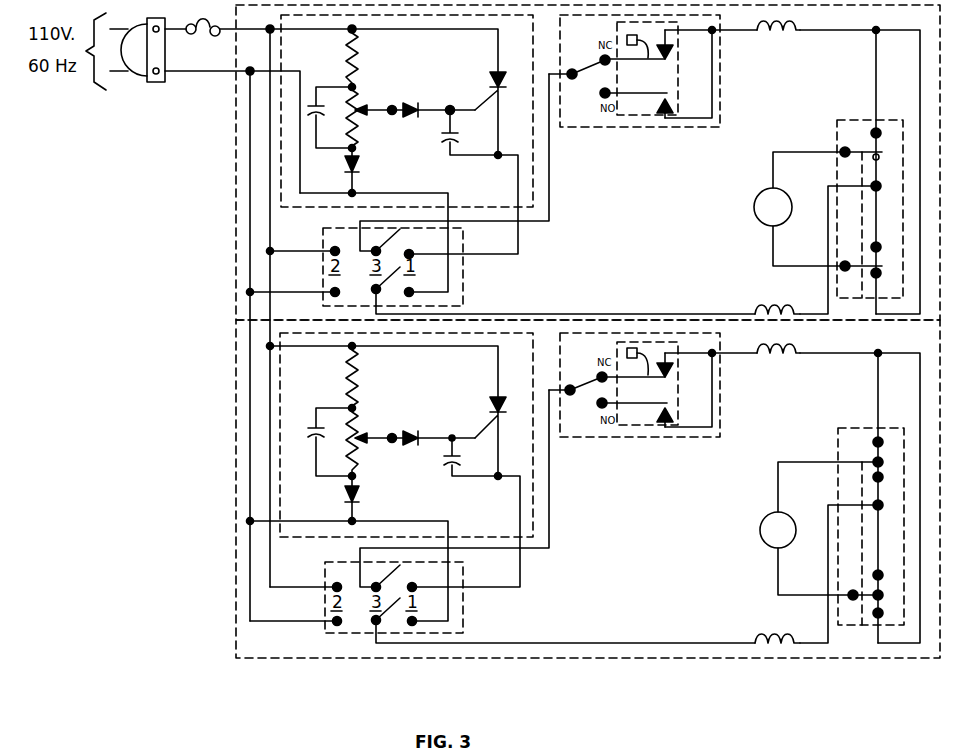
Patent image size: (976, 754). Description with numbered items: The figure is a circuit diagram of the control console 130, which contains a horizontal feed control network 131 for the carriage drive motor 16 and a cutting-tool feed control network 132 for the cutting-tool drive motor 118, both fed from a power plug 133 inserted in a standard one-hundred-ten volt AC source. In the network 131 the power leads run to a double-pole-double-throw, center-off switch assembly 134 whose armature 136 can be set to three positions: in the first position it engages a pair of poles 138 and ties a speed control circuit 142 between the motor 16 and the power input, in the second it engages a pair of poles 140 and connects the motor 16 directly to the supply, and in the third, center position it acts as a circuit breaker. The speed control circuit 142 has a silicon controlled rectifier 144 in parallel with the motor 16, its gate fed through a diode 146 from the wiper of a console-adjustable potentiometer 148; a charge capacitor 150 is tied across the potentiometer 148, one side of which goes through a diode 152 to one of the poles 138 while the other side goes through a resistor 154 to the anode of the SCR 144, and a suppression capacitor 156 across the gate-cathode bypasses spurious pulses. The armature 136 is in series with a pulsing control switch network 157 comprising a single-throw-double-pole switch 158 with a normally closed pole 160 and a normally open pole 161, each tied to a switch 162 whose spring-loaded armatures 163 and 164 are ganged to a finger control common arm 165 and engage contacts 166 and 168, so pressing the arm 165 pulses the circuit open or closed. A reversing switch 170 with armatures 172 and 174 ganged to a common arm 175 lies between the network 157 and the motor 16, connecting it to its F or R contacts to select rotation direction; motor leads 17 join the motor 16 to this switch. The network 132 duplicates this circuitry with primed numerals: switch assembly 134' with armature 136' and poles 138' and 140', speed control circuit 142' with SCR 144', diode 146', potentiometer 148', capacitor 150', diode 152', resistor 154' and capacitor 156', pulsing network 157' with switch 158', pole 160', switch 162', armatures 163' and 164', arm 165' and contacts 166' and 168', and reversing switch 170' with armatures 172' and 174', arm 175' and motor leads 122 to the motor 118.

The drive motor 16 is at (763, 219).
The motor leads 17 is at (773, 173).
The cutting-tool drive motor 118 is at (765, 549).
The motor leads 122 is at (778, 479).
The control console 130 is at (203, 479).
The horizontal feed control network 131 is at (236, 186).
The cutting-tool feed control network 132 is at (236, 391).
The power plug 133 is at (141, 78).
The switch assembly 134 is at (370, 264).
The switch assembly 134' is at (365, 606).
The armature 136 is at (410, 261).
The armature 136' is at (406, 625).
The poles 138 is at (454, 273).
The poles 138' is at (458, 604).
The poles 140 is at (307, 272).
The poles 140' is at (305, 604).
The speed control circuit 142 is at (439, 112).
The speed control circuit 142' is at (438, 436).
The silicon controlled rectifier 144 is at (480, 102).
The silicon controlled rectifier 144' is at (483, 426).
The diode 146 is at (433, 96).
The diode 146' is at (433, 423).
The potentiometer 148 is at (371, 117).
The potentiometer 148' is at (376, 442).
The charge capacitor 150 is at (329, 101).
The charge capacitor 150' is at (319, 434).
The diode 152 is at (332, 170).
The diode 152' is at (329, 498).
The resistor 154 is at (327, 58).
The resistor 154' is at (377, 377).
The suppression capacitor 156 is at (449, 135).
The suppression capacitor 156' is at (458, 466).
The pulsing control switch network 157 is at (668, 71).
The pulsing control switch network 157' is at (651, 400).
The switch 158 is at (584, 88).
The switch 158' is at (582, 404).
The pole 160 is at (614, 46).
The pole 160' is at (614, 362).
The pole 161 is at (593, 88).
The switch 162 is at (647, 96).
The switch 162' is at (621, 404).
The armature 163 is at (708, 56).
The armature 163' is at (710, 373).
The armature 164 is at (644, 124).
The armature 164' is at (650, 436).
The finger control common arm 165 is at (648, 61).
The finger control common arm 165' is at (633, 332).
The contact 166 is at (712, 45).
The contact 166' is at (708, 326).
The contact 168 is at (691, 91).
The contact 168' is at (714, 390).
The reversing switch 170 is at (822, 246).
The reversing switch 170' is at (811, 479).
The armature 172 is at (870, 197).
The armature 172' is at (848, 526).
The armature 174 is at (864, 308).
The armature 174' is at (828, 591).
The common arm 175 is at (827, 162).
The common arm 175' is at (826, 510).